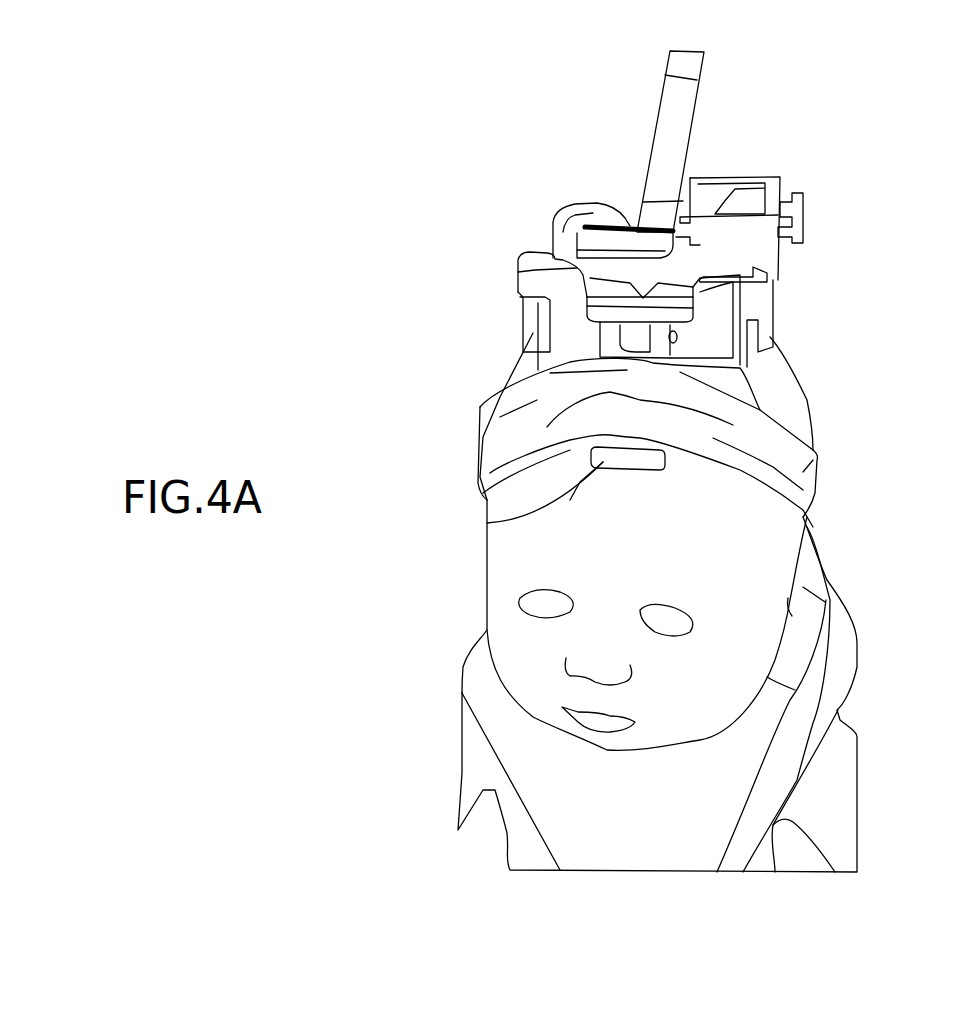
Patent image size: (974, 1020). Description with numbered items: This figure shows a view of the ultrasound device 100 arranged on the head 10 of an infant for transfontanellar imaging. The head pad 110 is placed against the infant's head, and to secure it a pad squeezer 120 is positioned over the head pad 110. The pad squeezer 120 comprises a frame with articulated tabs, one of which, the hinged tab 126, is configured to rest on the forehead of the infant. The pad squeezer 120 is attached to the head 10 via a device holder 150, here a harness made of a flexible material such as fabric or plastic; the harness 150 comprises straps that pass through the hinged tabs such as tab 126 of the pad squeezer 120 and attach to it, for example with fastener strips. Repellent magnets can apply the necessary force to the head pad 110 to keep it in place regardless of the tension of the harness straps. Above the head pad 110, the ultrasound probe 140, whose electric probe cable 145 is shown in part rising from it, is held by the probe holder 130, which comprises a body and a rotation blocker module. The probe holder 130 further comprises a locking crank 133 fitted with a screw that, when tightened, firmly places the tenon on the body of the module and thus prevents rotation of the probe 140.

The ultrasound device 100 is at (787, 103).
The electric probe cable 145 is at (663, 120).
The ultrasound probe 140 is at (607, 227).
The probe holder 130 is at (763, 243).
The locking crank 133 is at (812, 205).
The pad squeezer 120 is at (777, 285).
The head pad 110 is at (547, 357).
The head 10 is at (820, 402).
The device holder 150 is at (820, 460).
The articulated tab 126 is at (487, 523).